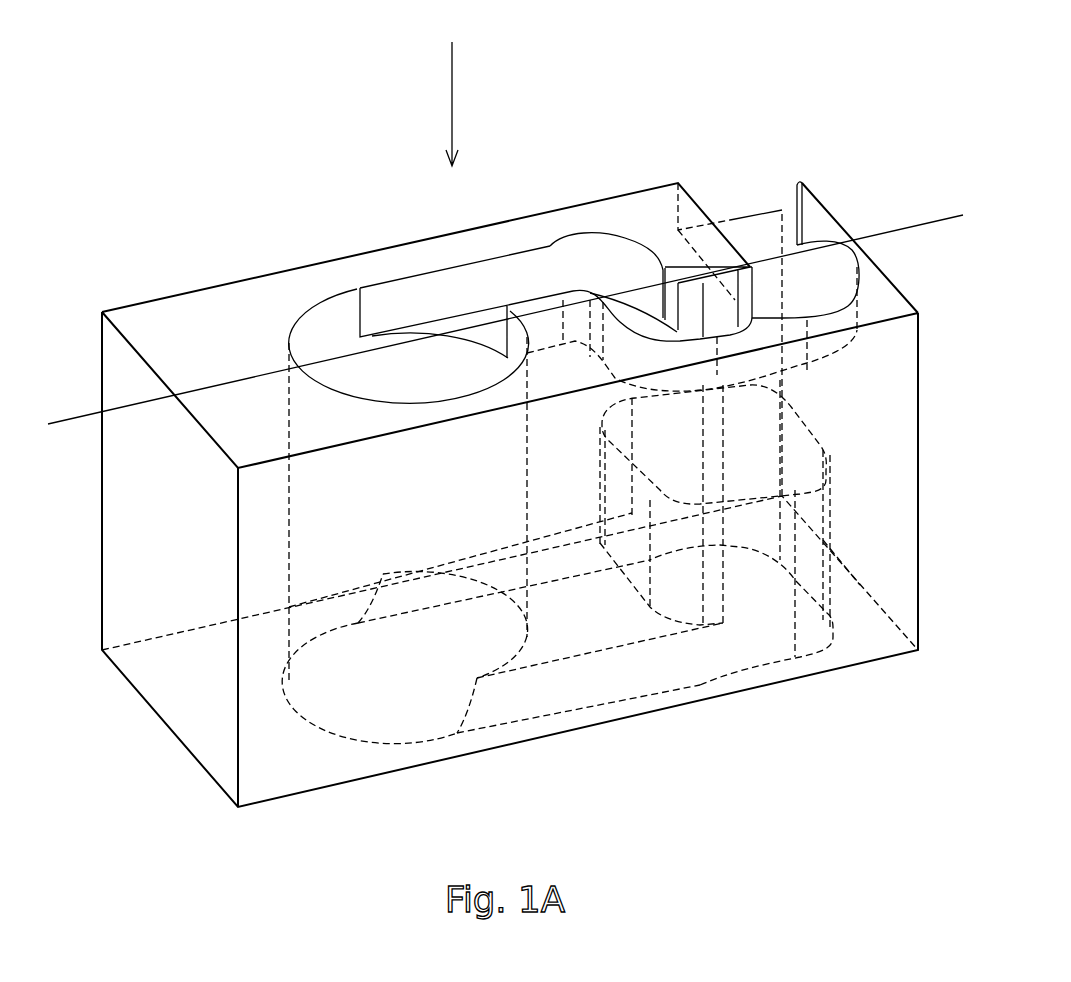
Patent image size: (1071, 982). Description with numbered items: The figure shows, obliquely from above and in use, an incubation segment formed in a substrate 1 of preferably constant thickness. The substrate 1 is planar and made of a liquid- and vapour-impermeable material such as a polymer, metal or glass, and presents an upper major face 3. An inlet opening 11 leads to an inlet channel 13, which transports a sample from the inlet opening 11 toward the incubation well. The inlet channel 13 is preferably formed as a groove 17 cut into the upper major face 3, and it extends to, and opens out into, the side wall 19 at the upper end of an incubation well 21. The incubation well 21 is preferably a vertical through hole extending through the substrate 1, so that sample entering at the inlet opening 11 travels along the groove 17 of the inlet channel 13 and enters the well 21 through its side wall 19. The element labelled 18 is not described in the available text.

The substrate 1 is at (918, 583).
The upper major face 3 is at (878, 308).
The inlet opening 11 is at (752, 225).
The inlet channel 13 is at (785, 250).
The groove 17 is at (807, 295).
The partition wall 18 is at (625, 313).
The side wall 19 is at (360, 348).
The incubation well 21 is at (328, 355).